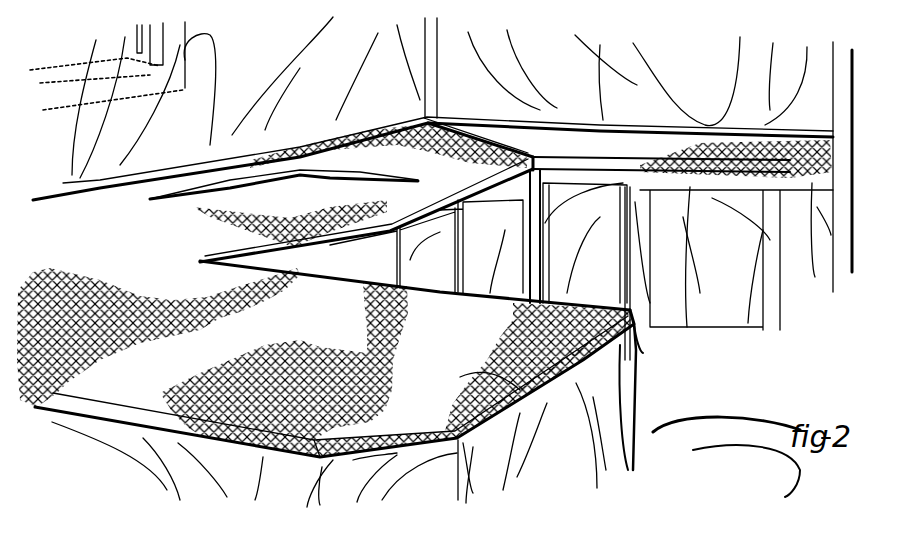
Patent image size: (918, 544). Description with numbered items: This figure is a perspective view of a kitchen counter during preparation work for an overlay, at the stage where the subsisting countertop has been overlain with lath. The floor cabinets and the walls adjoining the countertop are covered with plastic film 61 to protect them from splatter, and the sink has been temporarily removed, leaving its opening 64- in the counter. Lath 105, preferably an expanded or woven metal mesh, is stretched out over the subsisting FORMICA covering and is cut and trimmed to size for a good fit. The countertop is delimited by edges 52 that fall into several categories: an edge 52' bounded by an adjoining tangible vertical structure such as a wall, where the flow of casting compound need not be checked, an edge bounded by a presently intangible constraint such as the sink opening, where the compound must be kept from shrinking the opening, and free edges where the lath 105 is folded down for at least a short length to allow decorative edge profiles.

The edge bounded by tangible vertical structure 52' is at (433, 173).
The sink opening 64- is at (340, 209).
The edges 52 is at (373, 359).
The lath 105 is at (486, 378).
The plastic film 61 is at (724, 84).